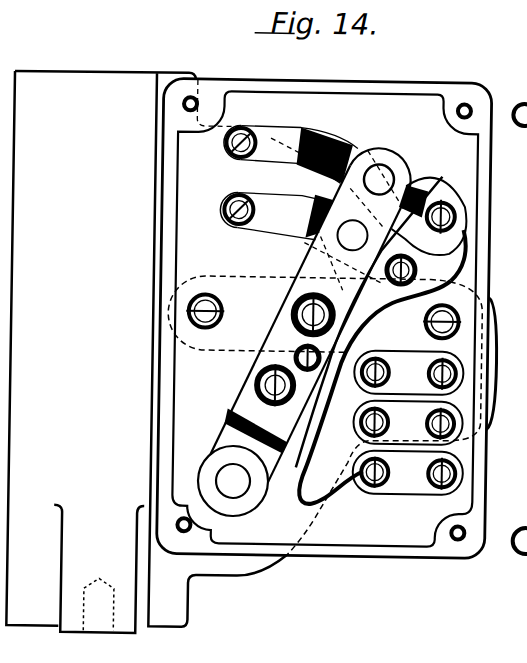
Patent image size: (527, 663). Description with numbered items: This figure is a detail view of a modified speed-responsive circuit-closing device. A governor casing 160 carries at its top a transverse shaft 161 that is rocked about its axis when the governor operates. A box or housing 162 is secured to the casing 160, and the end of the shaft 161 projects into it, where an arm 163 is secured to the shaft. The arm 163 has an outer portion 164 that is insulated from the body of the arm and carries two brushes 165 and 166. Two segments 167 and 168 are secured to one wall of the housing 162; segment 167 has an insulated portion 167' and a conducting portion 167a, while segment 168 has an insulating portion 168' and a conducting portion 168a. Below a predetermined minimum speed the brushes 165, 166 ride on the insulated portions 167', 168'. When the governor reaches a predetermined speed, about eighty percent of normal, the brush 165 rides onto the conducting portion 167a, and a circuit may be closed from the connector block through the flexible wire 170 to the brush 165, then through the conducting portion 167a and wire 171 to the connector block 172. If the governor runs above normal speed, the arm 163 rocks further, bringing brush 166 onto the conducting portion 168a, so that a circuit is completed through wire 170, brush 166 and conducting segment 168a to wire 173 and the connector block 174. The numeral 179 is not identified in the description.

The governor casing 160 is at (150, 352).
The transverse shaft 161 is at (235, 500).
The box or housing 162 is at (362, 553).
The arm 163 is at (257, 494).
The outer portion of arm 164 is at (398, 134).
The brush 165 is at (452, 183).
The brush 166 is at (383, 174).
The segment 167 is at (269, 224).
The conducting portion 167a is at (287, 200).
The insulated portion 167' is at (323, 239).
The segment 168 is at (290, 142).
The conducting portion 168a is at (278, 135).
The insulating portion 168' is at (341, 151).
The flexible wire 170 is at (292, 469).
The wire 171 is at (348, 416).
The connector block 172 is at (420, 414).
The wire 173 is at (468, 252).
The connector block 174 is at (440, 373).
The terminal block 179 is at (412, 484).